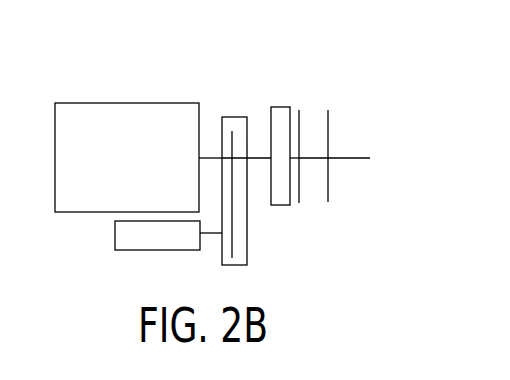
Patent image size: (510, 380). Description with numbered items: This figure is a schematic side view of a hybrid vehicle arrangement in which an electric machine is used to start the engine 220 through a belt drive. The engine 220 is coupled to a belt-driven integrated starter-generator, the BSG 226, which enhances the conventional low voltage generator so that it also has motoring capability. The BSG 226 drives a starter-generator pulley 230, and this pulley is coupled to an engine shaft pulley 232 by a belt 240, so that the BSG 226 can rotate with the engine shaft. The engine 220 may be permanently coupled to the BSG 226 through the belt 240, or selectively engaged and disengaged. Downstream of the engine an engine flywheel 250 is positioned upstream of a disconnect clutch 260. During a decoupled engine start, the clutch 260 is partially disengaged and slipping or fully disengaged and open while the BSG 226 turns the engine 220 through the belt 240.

The engine 220 is at (123, 103).
The BSG 226 is at (115, 238).
The starter-generator pulley 230 is at (232, 252).
The engine shaft pulley 232 is at (233, 133).
The belt 240 is at (247, 220).
The engine flywheel 250 is at (280, 107).
The disconnect clutch 260 is at (332, 82).